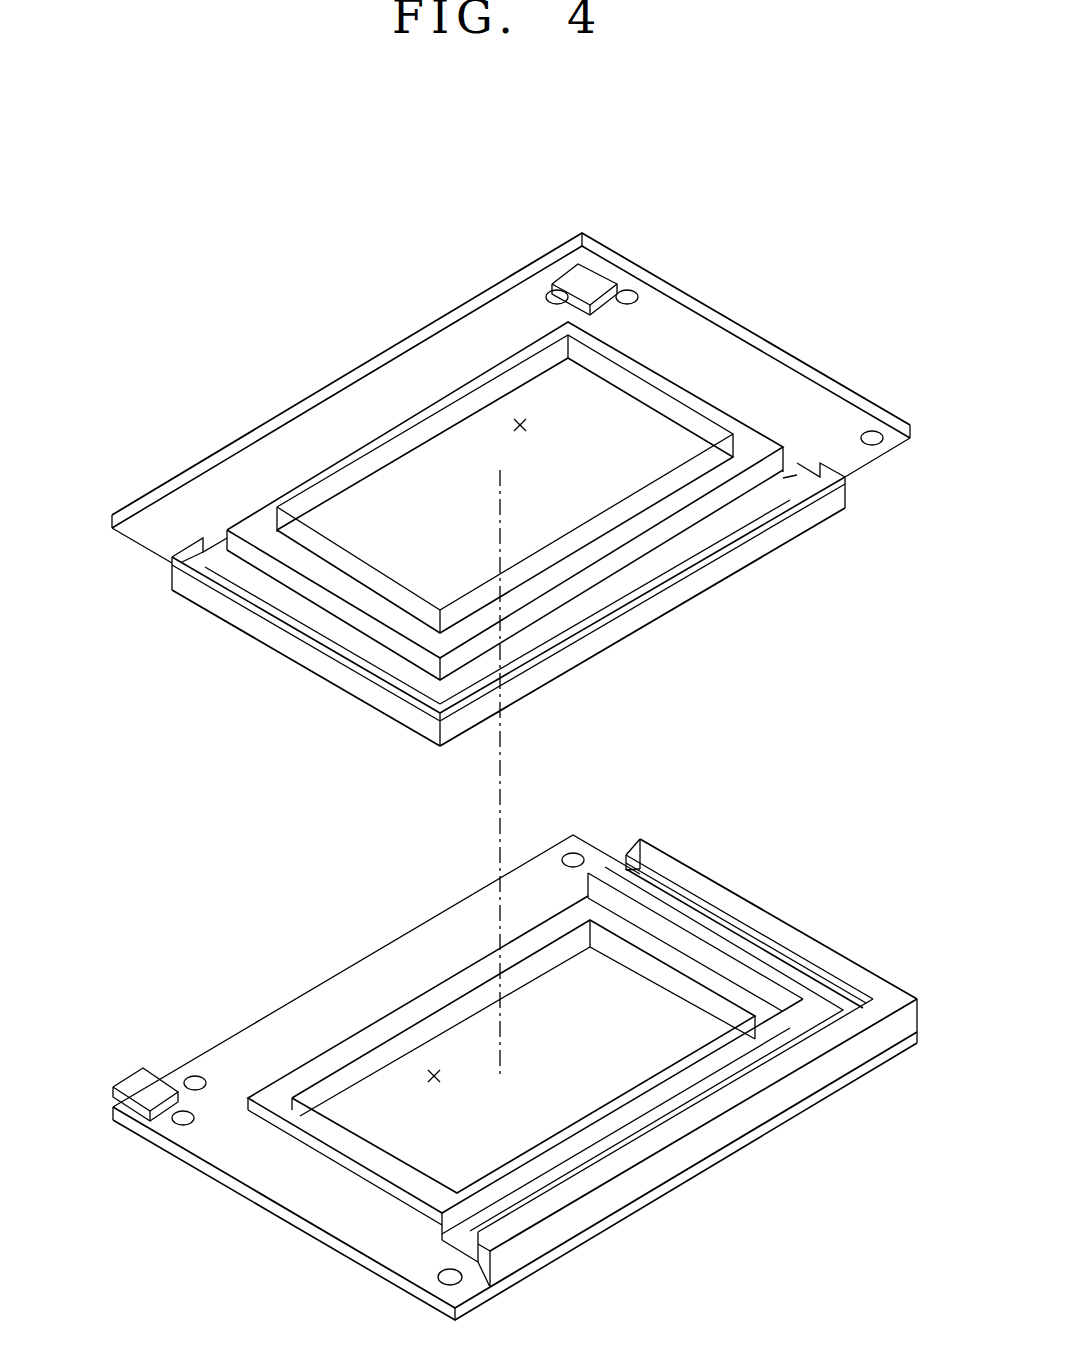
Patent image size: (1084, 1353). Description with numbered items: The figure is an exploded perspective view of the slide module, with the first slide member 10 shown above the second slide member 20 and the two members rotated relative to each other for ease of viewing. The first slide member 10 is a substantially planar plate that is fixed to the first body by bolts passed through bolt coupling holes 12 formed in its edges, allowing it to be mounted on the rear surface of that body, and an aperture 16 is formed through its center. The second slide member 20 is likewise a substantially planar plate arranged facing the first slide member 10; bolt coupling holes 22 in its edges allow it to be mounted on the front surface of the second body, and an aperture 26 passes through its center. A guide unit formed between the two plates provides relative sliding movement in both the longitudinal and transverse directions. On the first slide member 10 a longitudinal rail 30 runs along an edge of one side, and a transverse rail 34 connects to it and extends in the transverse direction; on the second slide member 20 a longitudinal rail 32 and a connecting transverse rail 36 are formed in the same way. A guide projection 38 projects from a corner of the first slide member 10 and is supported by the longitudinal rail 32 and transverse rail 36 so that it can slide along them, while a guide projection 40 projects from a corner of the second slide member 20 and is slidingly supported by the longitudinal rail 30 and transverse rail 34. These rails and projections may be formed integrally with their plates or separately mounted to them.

The first slide member 10 is at (766, 296).
The bolt coupling holes 12 is at (882, 446).
The aperture 16 is at (518, 423).
The second slide member 20 is at (806, 906).
The bolt coupling holes 22 is at (584, 856).
The aperture 26 is at (430, 1074).
The longitudinal rail 30 is at (680, 600).
The longitudinal rail 32 is at (682, 1128).
The transverse rail 34 is at (285, 650).
The transverse rail 36 is at (840, 958).
The guide projection 38 is at (597, 268).
The guide projection 40 is at (130, 1077).